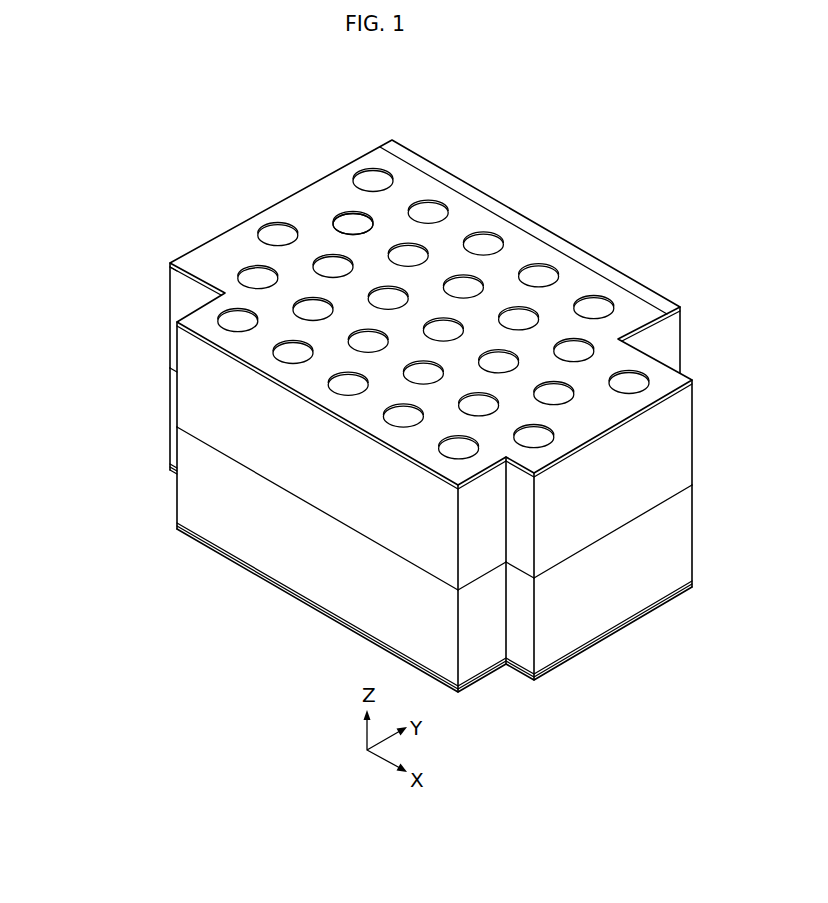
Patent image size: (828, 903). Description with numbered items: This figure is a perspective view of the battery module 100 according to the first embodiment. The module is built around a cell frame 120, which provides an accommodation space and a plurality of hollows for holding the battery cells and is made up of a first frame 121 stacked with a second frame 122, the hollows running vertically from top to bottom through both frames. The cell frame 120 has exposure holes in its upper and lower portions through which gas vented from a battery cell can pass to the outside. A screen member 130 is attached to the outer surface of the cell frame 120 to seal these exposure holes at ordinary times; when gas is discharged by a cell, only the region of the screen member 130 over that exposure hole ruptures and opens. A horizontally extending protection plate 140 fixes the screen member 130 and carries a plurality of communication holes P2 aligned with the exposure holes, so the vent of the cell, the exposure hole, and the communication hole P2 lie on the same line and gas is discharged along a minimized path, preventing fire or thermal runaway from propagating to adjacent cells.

The battery module 100 is at (235, 96).
The cell frame 120 is at (110, 390).
The first frame 121 is at (185, 395).
The second frame 122 is at (185, 493).
The screen member 130 is at (273, 221).
The protection plate 140 is at (213, 242).
The communication hole P2 is at (345, 212).